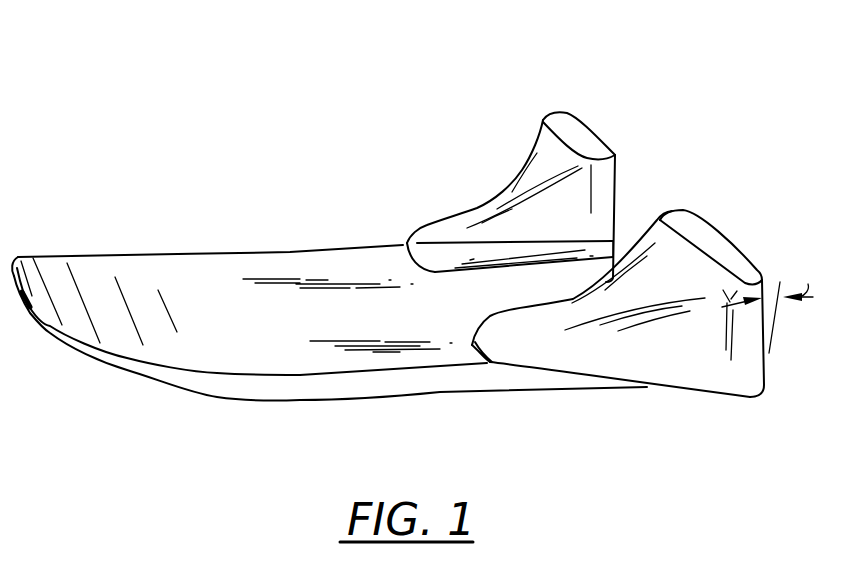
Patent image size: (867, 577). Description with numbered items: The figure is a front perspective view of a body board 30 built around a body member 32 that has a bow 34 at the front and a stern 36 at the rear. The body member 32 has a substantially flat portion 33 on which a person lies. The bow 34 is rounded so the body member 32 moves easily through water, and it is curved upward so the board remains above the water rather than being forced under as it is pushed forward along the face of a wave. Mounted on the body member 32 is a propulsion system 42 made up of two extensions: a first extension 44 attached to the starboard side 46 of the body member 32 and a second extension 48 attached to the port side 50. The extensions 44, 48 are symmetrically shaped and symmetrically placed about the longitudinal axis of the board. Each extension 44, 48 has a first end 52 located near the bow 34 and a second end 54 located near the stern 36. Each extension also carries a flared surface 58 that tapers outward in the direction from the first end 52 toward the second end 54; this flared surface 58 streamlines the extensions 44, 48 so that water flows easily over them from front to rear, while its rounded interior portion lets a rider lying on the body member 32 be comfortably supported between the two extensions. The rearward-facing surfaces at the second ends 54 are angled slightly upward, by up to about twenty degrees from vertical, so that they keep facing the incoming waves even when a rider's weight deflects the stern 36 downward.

The body board 30 is at (210, 178).
The body member 32 is at (274, 328).
The substantially flat portion 33 is at (352, 361).
The bow 34 is at (48, 259).
The stern 36 is at (573, 277).
The propulsion system 42 is at (552, 60).
The first extension 44 is at (517, 188).
The starboard side 46 is at (302, 258).
The second extension 48 is at (693, 380).
The port side 50 is at (281, 397).
The first end 52 is at (405, 245).
The second end 54 is at (573, 115).
The flared surface 58 is at (488, 200).